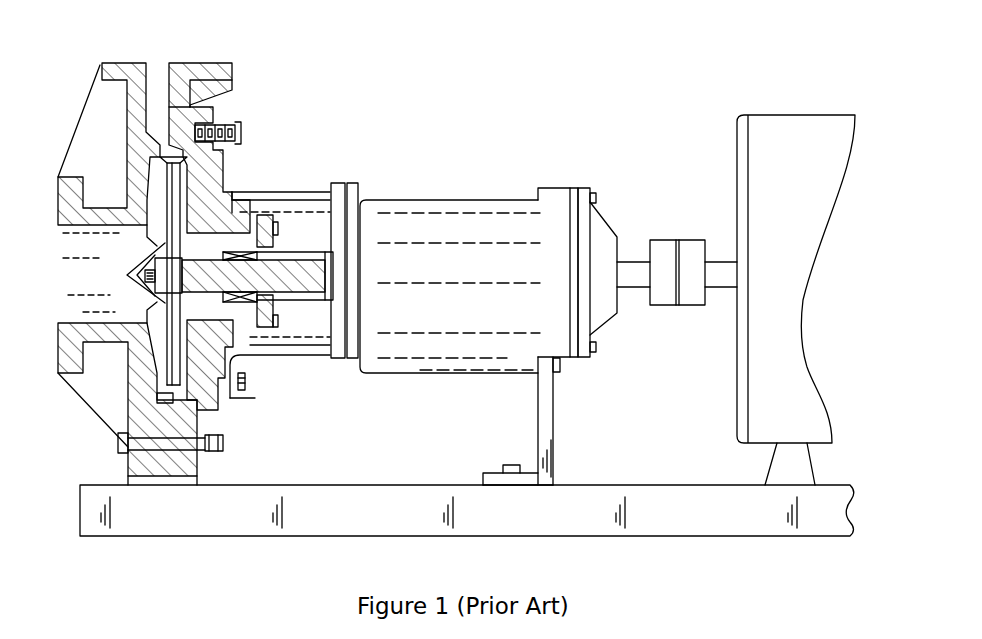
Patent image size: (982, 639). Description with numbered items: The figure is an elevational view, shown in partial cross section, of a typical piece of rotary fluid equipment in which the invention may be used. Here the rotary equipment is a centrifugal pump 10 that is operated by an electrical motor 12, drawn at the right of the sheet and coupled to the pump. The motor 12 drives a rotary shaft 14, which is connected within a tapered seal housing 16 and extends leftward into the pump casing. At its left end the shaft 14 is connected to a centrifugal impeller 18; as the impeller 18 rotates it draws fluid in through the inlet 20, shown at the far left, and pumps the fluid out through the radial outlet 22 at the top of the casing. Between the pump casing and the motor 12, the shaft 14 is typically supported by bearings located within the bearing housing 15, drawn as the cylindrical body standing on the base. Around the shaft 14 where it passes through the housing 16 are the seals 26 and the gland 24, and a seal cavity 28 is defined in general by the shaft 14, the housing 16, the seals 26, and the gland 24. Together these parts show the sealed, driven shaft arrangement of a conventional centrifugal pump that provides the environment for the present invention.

The centrifugal pump 10 is at (478, 194).
The electrical motor 12 is at (758, 155).
The rotary shaft 14 is at (297, 277).
The bearing housing 15 is at (438, 375).
The tapered seal housing 16 is at (222, 241).
The centrifugal impeller 18 is at (166, 376).
The inlet 20 is at (90, 278).
The radial outlet 22 is at (158, 77).
The gland 24 is at (270, 258).
The seals 26 is at (238, 292).
The seal cavity 28 is at (198, 307).